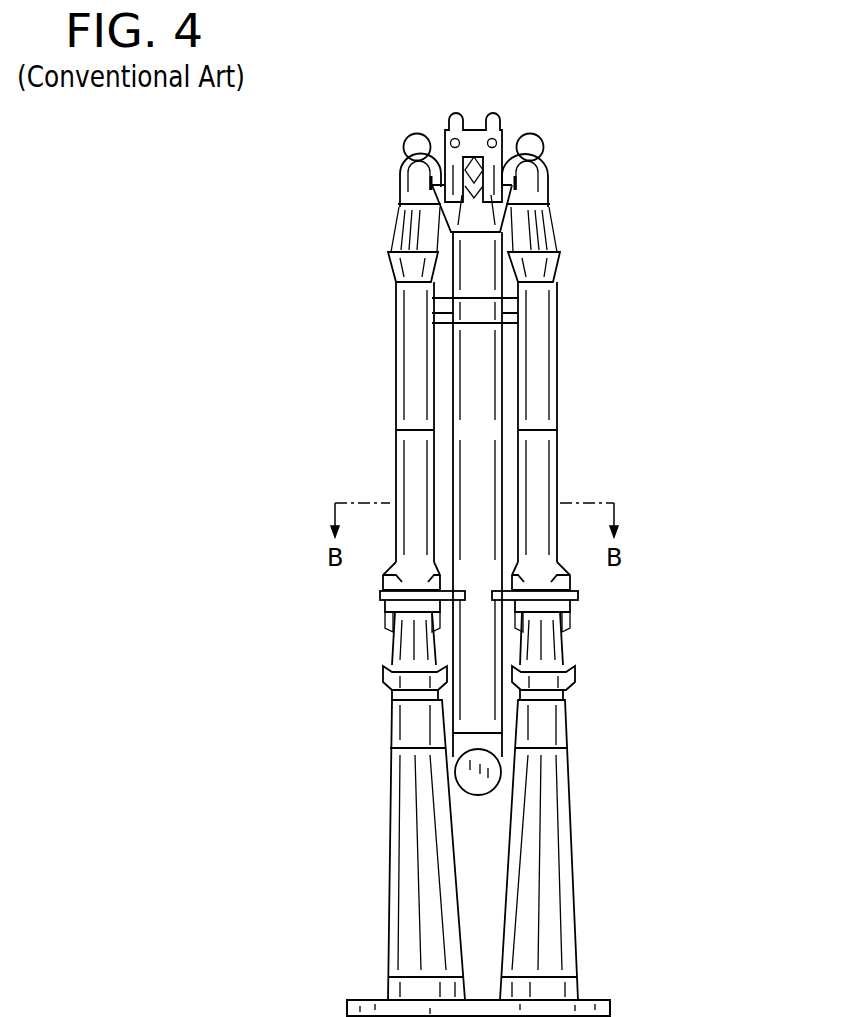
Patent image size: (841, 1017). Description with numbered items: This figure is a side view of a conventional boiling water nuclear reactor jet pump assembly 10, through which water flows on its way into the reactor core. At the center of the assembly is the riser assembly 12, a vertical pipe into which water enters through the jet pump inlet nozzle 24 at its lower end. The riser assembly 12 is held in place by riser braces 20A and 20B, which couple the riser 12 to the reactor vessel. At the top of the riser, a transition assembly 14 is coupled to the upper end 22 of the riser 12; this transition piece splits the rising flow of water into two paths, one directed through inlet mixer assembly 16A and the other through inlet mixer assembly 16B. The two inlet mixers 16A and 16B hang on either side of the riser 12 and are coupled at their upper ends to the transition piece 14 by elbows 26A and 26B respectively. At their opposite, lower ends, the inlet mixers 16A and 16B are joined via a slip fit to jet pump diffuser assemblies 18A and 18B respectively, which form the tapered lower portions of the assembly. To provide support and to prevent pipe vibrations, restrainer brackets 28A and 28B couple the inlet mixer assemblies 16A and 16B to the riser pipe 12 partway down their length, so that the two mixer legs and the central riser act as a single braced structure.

The jet pump assembly 10 is at (660, 216).
The riser assembly 12 is at (480, 421).
The transition assembly 14 is at (493, 211).
The inlet mixer assembly 16A is at (557, 309).
The inlet mixer assembly 16B is at (397, 369).
The diffuser assembly 18A is at (577, 838).
The diffuser assembly 18B is at (388, 908).
The riser brace 20A is at (512, 298).
The riser brace 20B is at (435, 305).
The upper end 22 is at (498, 240).
The jet pump inlet nozzle 24 is at (489, 778).
The elbow 26A is at (549, 170).
The elbow 26B is at (401, 172).
The restrainer bracket 28A is at (580, 597).
The restrainer bracket 28B is at (382, 600).